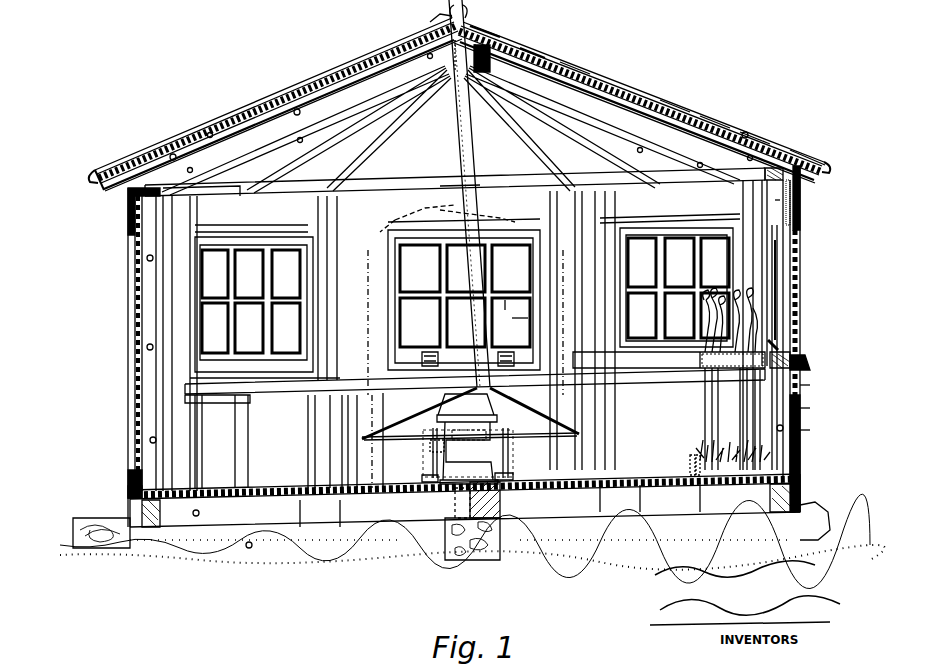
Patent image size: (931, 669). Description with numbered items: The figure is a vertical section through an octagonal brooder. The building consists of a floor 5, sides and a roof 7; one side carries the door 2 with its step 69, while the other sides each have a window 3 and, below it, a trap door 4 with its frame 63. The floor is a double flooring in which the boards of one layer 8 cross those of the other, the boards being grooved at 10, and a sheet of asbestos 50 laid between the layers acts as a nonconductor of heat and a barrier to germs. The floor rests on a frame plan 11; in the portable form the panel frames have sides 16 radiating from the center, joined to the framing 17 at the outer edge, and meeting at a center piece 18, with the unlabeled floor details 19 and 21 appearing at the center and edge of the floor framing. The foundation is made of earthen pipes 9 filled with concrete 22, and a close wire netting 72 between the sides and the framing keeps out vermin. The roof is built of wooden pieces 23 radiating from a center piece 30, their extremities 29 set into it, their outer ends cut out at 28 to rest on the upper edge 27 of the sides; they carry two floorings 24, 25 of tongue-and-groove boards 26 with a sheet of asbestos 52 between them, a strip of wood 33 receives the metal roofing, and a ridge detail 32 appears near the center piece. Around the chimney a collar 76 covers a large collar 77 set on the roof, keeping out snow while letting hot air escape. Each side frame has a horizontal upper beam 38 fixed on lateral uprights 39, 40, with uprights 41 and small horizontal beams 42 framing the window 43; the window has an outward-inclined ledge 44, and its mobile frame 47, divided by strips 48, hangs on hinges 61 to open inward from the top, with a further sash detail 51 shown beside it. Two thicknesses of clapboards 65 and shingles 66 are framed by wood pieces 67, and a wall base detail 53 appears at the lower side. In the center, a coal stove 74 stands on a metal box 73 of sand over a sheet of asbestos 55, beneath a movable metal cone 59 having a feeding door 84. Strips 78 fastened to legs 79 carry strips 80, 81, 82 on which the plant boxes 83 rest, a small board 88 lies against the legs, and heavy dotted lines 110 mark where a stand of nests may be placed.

The door 2 is at (135, 294).
The window 3 is at (778, 270).
The trap door 4 is at (512, 450).
The floor 5 is at (586, 498).
The roof 7 is at (575, 72).
The floor layer 8 is at (310, 513).
The earthen pipe 9 is at (349, 513).
The groove 10 is at (160, 486).
The frame plan 11 is at (657, 498).
The frame side 16 is at (712, 498).
The framing 17 is at (162, 522).
The center piece 18 is at (498, 508).
The floor opening 19 is at (456, 512).
The bolt 21 is at (300, 112).
The concrete 22 is at (180, 556).
The roof piece 23 is at (628, 86).
The roof flooring 24 is at (676, 108).
The roof flooring 25 is at (714, 124).
The board 26 is at (752, 138).
The upper edge 27 is at (780, 157).
The cut-out 28 is at (140, 162).
The extremity 29 is at (502, 34).
The center piece 30 is at (478, 80).
The ridge flashing 32 is at (430, 22).
The strip of wood 33 is at (208, 126).
The upper beam 38 is at (735, 182).
The lateral upright 39 is at (340, 244).
The lateral upright 40 is at (552, 258).
The upright 41 is at (790, 200).
The small horizontal beam 42 is at (808, 358).
The window 43 is at (777, 248).
The ledge 44 is at (792, 354).
The frame 47 is at (533, 312).
The cross strip 48 is at (505, 300).
The sheet of asbestos 50 is at (207, 516).
The sash fastener 51 is at (514, 358).
The sheet of asbestos 52 is at (538, 62).
The wall base member 53 is at (806, 431).
The sheet of asbestos 55 is at (426, 478).
The movable metal cone 59 is at (515, 403).
The hinge 61 is at (771, 338).
The trap door frame 63 is at (428, 468).
The clapboard 65 is at (804, 392).
The shingle 66 is at (804, 410).
The wood piece 67 is at (797, 216).
The step 69 is at (130, 490).
The wire netting 72 is at (836, 505).
The metal box 73 is at (514, 476).
The stove 74 is at (467, 242).
The collar 76 is at (468, 18).
The large collar 77 is at (498, 22).
The strip of wood 78 is at (738, 380).
The wooden leg 79 is at (745, 392).
The wooden strip 80 is at (718, 385).
The wooden strip 81 is at (705, 380).
The wooden strip 82 is at (760, 378).
The plant box 83 is at (475, 341).
The door 84 is at (456, 447).
The small board 88 is at (714, 457).
The heavy dotted lines 110 is at (558, 322).